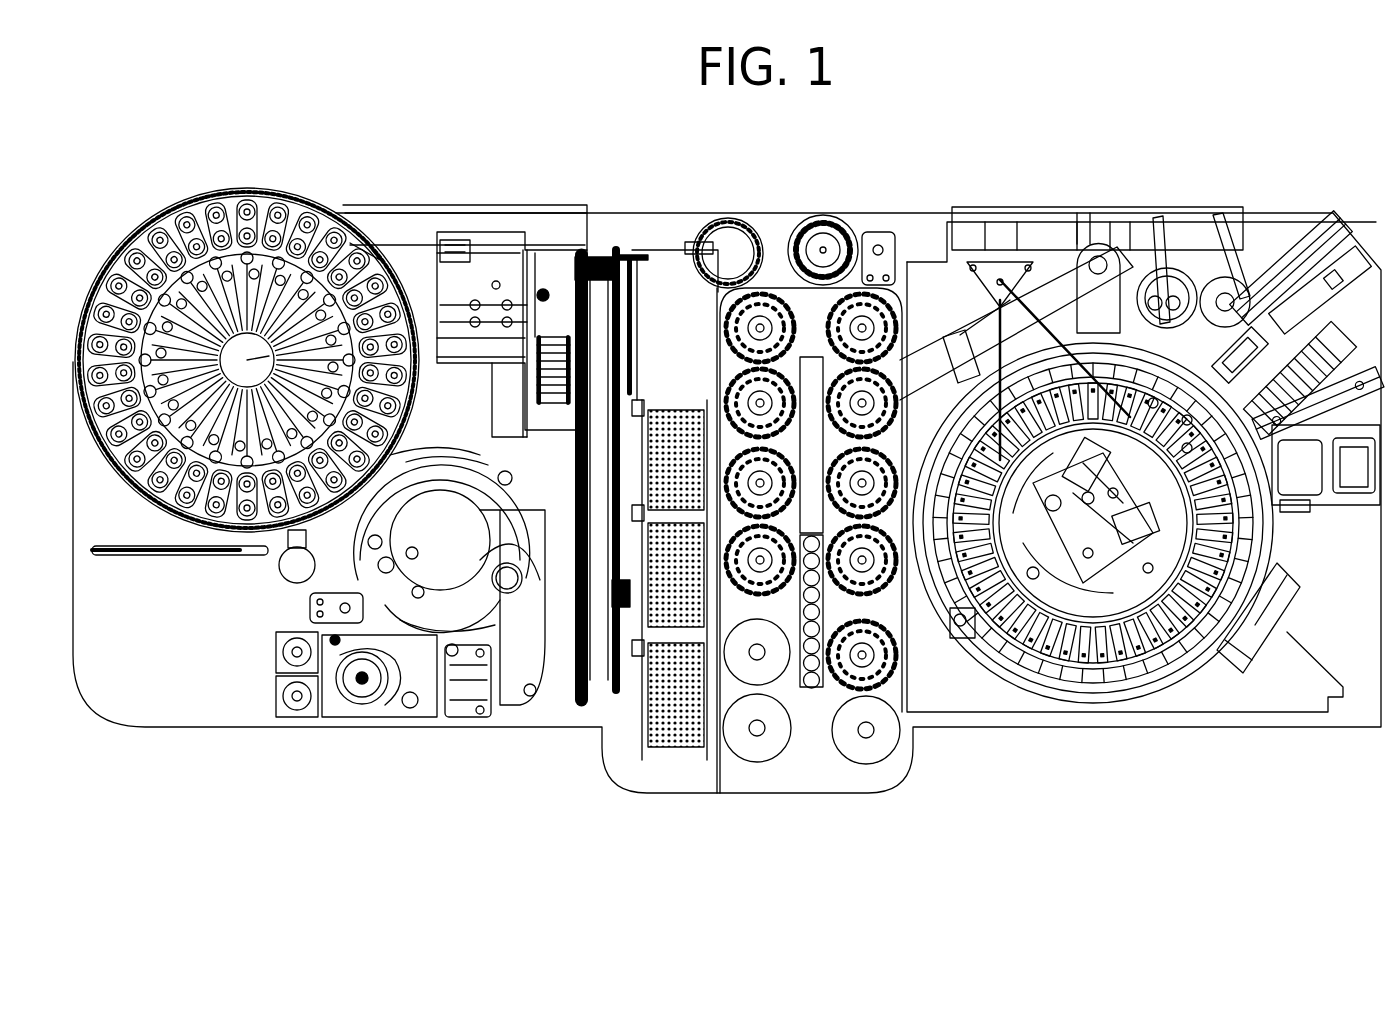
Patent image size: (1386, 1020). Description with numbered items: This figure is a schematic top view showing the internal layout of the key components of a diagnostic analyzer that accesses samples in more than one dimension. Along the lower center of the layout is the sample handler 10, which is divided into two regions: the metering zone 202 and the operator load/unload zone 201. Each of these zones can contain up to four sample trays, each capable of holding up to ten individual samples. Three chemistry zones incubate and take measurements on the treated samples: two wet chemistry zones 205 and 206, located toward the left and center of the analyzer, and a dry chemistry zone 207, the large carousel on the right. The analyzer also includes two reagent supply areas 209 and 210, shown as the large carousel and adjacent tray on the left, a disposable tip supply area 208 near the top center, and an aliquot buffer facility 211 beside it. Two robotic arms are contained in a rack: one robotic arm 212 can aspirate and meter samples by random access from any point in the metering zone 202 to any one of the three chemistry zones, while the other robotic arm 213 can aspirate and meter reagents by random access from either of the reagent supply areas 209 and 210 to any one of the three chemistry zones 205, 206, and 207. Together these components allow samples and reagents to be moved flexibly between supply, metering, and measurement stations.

The sample handler 10 is at (838, 794).
The operator load/unload zone 201 is at (740, 682).
The metering zone 202 is at (882, 318).
The wet chemistry zone 205 is at (483, 270).
The wet chemistry zone 206 is at (418, 610).
The dry chemistry zone 207 is at (1148, 690).
The disposable tip supply area 208 is at (836, 226).
The reagent supply area 209 is at (107, 265).
The reagent supply area 210 is at (103, 440).
The aliquot buffer facility 211 is at (700, 232).
The robotic arm 212 is at (972, 330).
The robotic arm 213 is at (372, 262).